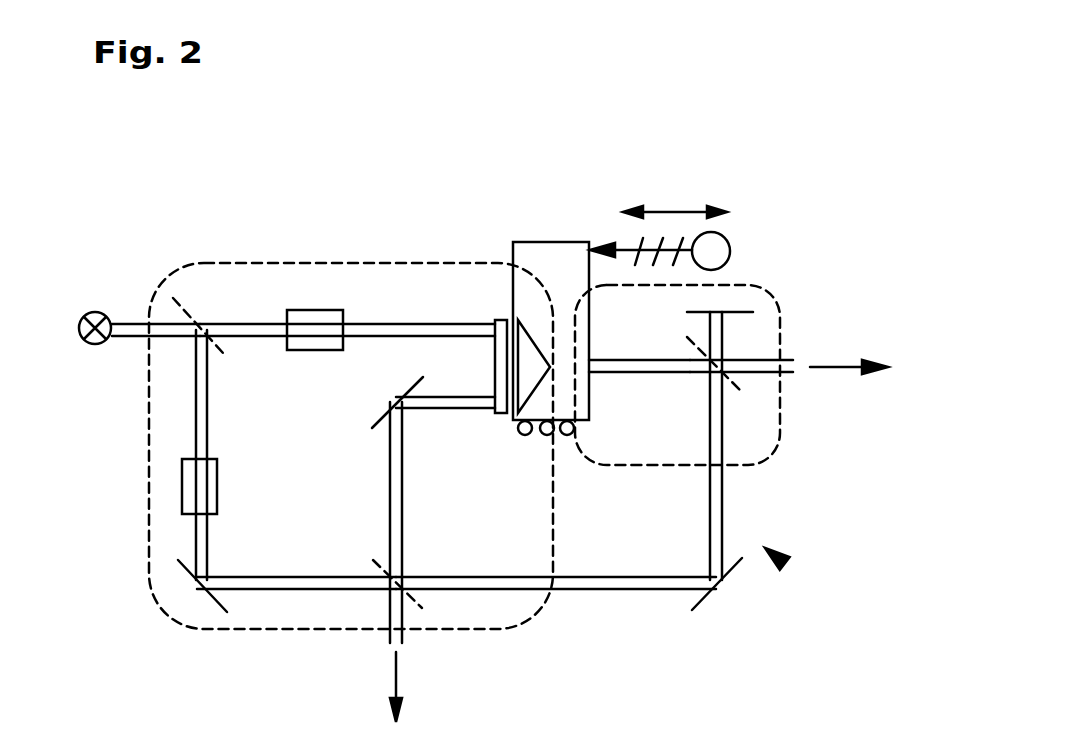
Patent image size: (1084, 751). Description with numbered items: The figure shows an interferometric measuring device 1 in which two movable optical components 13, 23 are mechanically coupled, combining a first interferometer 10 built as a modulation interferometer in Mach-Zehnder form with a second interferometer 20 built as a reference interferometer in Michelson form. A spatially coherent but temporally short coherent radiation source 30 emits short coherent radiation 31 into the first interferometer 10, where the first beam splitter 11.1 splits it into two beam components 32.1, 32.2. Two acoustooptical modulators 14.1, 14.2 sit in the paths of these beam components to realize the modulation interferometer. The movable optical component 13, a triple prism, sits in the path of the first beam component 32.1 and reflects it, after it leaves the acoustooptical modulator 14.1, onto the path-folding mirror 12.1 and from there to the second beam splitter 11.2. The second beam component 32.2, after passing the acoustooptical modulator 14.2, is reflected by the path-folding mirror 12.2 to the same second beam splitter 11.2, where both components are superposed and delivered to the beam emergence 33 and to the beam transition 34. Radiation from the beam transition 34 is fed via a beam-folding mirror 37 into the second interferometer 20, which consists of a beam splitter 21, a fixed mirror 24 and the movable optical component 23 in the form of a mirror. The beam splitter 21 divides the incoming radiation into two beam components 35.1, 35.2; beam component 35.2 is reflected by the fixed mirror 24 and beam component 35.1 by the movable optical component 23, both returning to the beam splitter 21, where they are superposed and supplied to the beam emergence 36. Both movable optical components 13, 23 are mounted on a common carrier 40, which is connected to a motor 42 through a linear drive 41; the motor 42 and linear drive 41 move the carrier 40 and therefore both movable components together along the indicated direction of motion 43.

The interferometric measuring device 1 is at (783, 562).
The first interferometer 10 is at (275, 262).
The first beam splitter 11.1 is at (193, 297).
The second beam splitter 11.2 is at (384, 572).
The path-folding mirror 12.1 is at (423, 378).
The path-folding mirror 12.2 is at (180, 570).
The movable optical component 13 is at (514, 321).
The acoustooptical modulator 14.1 is at (318, 312).
The acoustooptical modulator 14.2 is at (192, 500).
The second interferometer 20 is at (748, 284).
The beam splitter 21 is at (724, 361).
The movable optical component 23 is at (590, 411).
The fixed mirror 24 is at (748, 310).
The radiation source 30 is at (97, 312).
The short coherent radiation 31 is at (133, 331).
The first beam component 32.1 is at (377, 332).
The second beam component 32.2 is at (290, 585).
The beam emergence 33 is at (398, 665).
The beam transition 34 is at (622, 585).
The beam component 35.1 is at (674, 361).
The beam component 35.2 is at (722, 332).
The beam emergence 36 is at (833, 369).
The beam-folding mirror 37 is at (700, 601).
The common carrier 40 is at (547, 242).
The linear drive 41 is at (628, 248).
The motor 42 is at (726, 234).
The direction of motion 43 is at (672, 212).